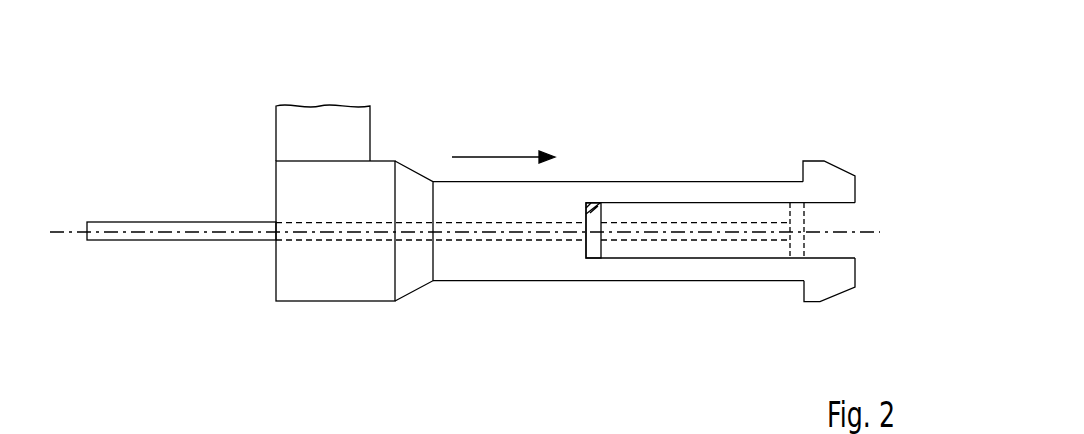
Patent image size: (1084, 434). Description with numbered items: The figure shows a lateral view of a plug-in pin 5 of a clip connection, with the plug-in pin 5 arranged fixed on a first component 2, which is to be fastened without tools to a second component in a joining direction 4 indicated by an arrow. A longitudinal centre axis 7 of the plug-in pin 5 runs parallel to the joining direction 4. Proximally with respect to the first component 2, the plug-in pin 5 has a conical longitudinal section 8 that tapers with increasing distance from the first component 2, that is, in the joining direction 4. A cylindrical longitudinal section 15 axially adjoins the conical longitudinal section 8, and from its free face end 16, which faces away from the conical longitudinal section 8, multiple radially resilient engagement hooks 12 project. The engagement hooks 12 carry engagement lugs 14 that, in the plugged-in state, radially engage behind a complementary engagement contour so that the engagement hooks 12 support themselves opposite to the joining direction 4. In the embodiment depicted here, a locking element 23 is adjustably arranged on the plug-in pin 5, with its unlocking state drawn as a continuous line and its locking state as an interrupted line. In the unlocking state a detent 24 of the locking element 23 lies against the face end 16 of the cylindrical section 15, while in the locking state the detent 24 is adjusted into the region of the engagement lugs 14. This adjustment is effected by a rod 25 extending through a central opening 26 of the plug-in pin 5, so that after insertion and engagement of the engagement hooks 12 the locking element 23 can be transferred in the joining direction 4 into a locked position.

The first component 2 is at (337, 100).
The joining direction 4 is at (497, 157).
The plug-in pin 5 is at (386, 155).
The longitudinal centre axis 7 is at (880, 232).
The conical longitudinal section 8 is at (413, 293).
The engagement hooks 12 is at (688, 197).
The engagement lugs 14 is at (803, 170).
The cylindrical longitudinal section 15 is at (500, 281).
The free face end 16 is at (600, 203).
The locking element 23 is at (601, 212).
The detent 24 is at (593, 259).
The rod 25 is at (225, 241).
The central opening 26 is at (338, 243).